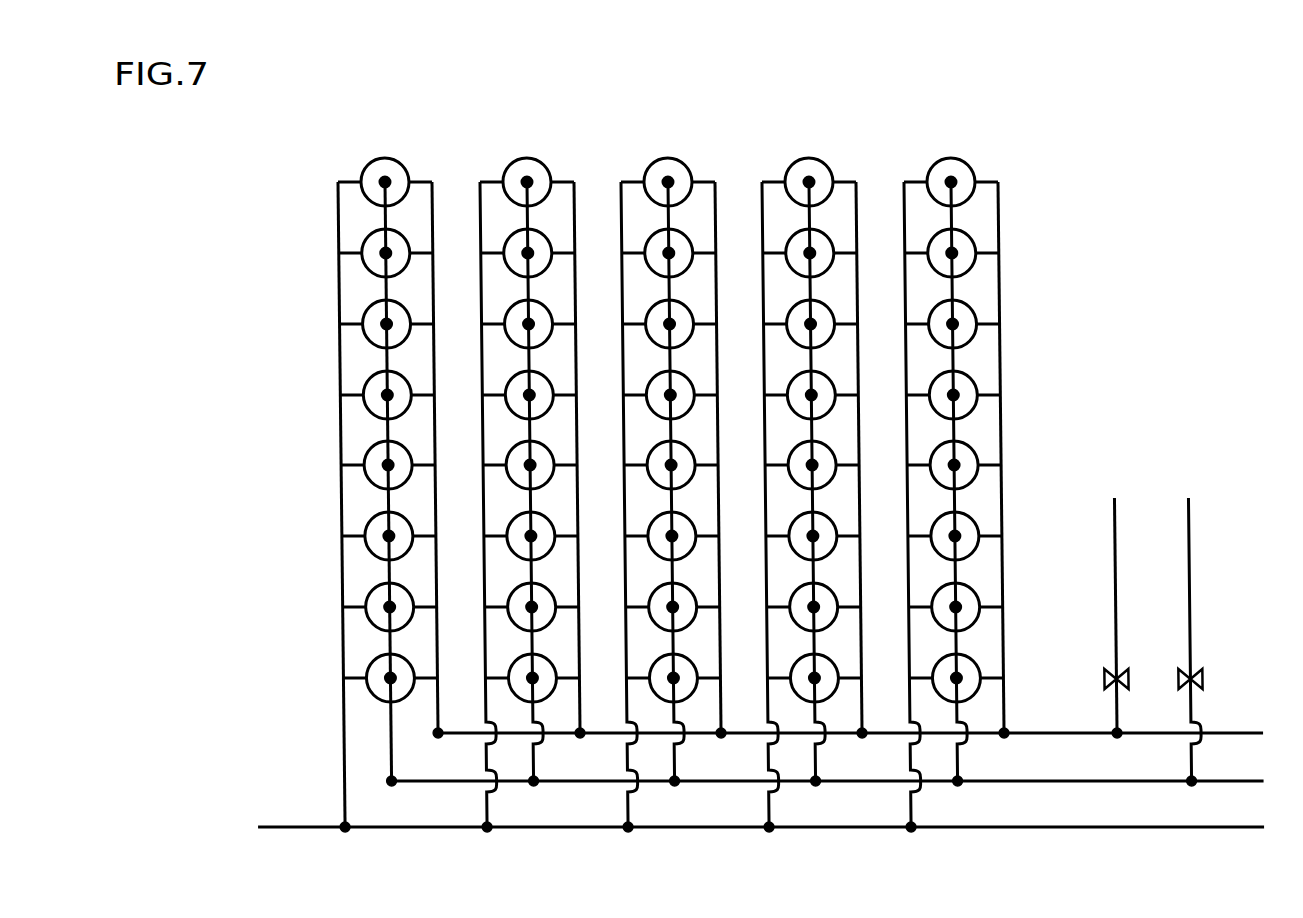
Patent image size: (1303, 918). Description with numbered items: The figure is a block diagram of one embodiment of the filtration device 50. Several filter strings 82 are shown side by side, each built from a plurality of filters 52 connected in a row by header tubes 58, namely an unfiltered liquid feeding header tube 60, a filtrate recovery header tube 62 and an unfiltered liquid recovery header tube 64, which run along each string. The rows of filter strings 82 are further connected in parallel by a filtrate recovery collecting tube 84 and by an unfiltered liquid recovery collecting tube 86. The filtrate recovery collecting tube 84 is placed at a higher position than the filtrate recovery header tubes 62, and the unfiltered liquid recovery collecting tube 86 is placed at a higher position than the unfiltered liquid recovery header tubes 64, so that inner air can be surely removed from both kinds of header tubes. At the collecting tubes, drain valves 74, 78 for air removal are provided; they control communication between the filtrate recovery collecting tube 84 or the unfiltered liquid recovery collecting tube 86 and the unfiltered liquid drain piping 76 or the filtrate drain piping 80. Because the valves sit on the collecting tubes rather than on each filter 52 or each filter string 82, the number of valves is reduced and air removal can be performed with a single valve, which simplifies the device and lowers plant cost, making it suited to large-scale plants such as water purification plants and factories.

The filtration device 50 is at (1216, 137).
The filter 52 is at (680, 408).
The header tube 58 is at (367, 481).
The unfiltered liquid feeding header tube 60 is at (337, 213).
The filtrate recovery header tube 62 is at (434, 198).
The unfiltered liquid recovery header tube 64 is at (385, 364).
The drain valve 74 is at (1192, 671).
The unfiltered liquid drain piping 76 is at (1185, 572).
The drain valve 78 is at (1104, 671).
The filtrate drain piping 80 is at (1111, 572).
The filter string 82 is at (618, 440).
The filtrate recovery collecting tube 84 is at (736, 733).
The unfiltered liquid recovery collecting tube 86 is at (583, 781).